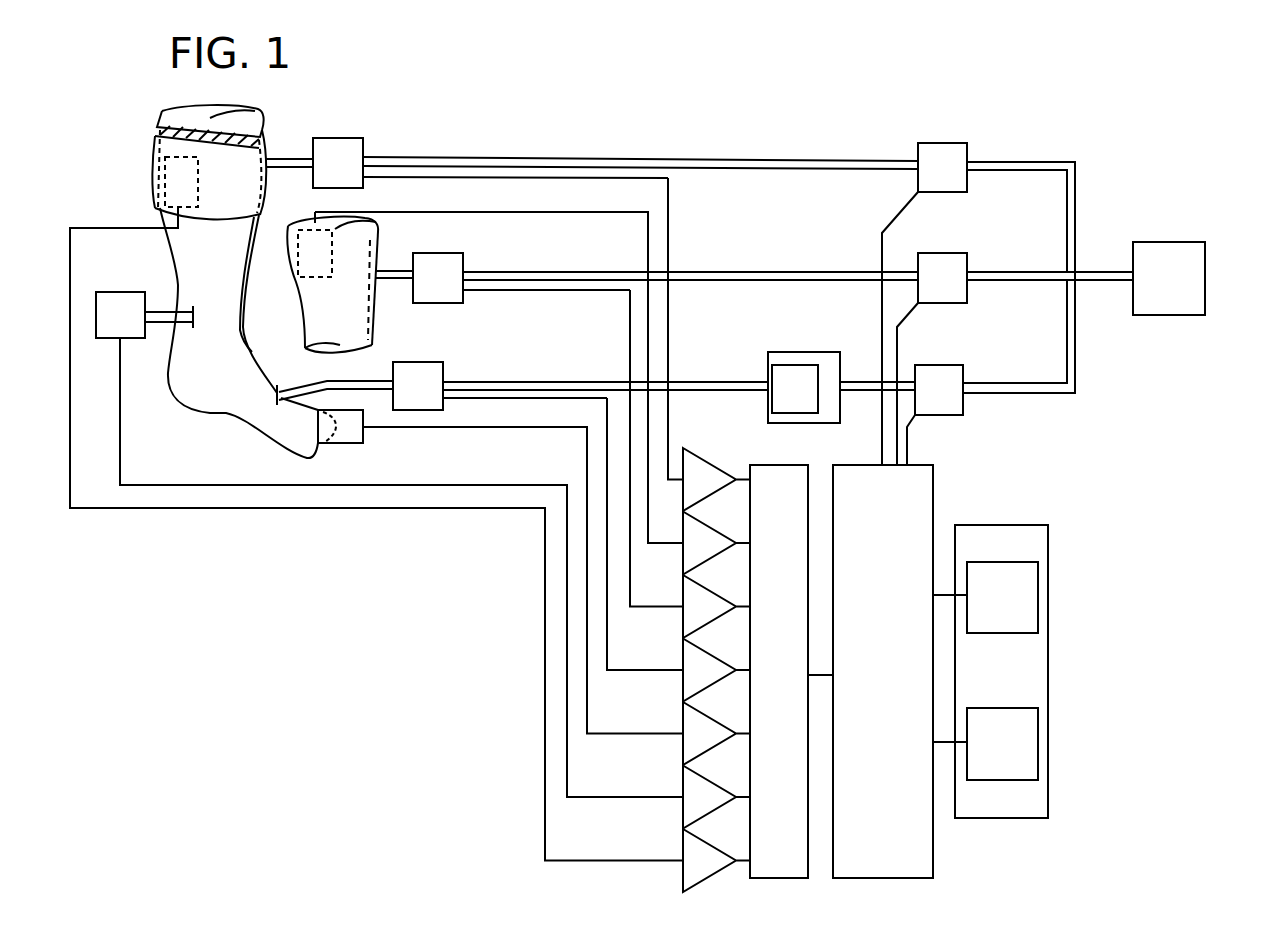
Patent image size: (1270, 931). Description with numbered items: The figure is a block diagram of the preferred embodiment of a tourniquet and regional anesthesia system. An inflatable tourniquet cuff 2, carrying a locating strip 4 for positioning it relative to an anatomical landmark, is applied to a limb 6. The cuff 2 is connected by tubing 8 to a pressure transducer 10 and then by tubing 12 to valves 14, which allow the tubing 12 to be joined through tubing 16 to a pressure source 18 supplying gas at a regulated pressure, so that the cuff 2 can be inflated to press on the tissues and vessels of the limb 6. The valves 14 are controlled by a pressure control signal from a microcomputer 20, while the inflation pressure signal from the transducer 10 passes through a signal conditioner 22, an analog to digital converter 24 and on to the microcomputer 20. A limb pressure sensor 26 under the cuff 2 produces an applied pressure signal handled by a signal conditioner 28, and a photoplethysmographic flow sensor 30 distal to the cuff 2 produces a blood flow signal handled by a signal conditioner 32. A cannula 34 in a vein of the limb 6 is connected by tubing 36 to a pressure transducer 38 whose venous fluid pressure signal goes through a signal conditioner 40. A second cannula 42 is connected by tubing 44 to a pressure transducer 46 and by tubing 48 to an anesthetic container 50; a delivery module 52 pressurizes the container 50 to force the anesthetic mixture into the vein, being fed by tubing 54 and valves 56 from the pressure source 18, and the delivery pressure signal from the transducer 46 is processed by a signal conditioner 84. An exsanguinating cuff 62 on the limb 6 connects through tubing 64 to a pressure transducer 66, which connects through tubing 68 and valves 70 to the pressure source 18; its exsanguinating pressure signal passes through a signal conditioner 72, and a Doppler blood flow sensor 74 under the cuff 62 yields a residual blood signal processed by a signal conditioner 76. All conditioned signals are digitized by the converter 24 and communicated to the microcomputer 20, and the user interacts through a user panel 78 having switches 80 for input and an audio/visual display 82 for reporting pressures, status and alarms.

The inflatable tourniquet cuff 2 is at (155, 143).
The locating strip 4 is at (267, 150).
The limb 6 is at (223, 417).
The tubing 8 is at (289, 158).
The pressure transducer 10 is at (364, 147).
The tubing 12 is at (541, 160).
The valves 14 is at (968, 152).
The tubing 16 is at (1077, 185).
The pressure source 18 is at (1207, 265).
The microcomputer 20 is at (935, 478).
The signal conditioner 22 is at (719, 470).
The analog to digital converter 24 is at (812, 470).
The limb pressure sensor 26 is at (153, 182).
The signal conditioner 28 is at (720, 852).
The photoplethysmographic flow sensor 30 is at (350, 444).
The signal conditioner 32 is at (720, 726).
The cannula 34 is at (196, 316).
The tubing 36 is at (157, 312).
The pressure transducer 38 is at (97, 293).
The signal conditioner 40 is at (720, 789).
The cannula 42 is at (273, 393).
The tubing 44 is at (378, 362).
The pressure transducer 46 is at (444, 372).
The tubing 48 is at (533, 368).
The anesthetic container 50 is at (768, 375).
The delivery module 52 is at (803, 352).
The tubing 54 is at (870, 382).
The valves 56 is at (963, 372).
The exsanguinating cuff 62 is at (289, 226).
The tubing 64 is at (385, 270).
The pressure transducer 66 is at (464, 260).
The tubing 68 is at (532, 272).
The valves 70 is at (968, 263).
The signal conditioner 72 is at (720, 597).
The Doppler blood flow sensor 74 is at (297, 252).
The signal conditioner 76 is at (719, 537).
The user panel 78 is at (1050, 535).
The switches 80 is at (1040, 720).
The audio/visual display 82 is at (1040, 578).
The signal conditioner 84 is at (721, 663).